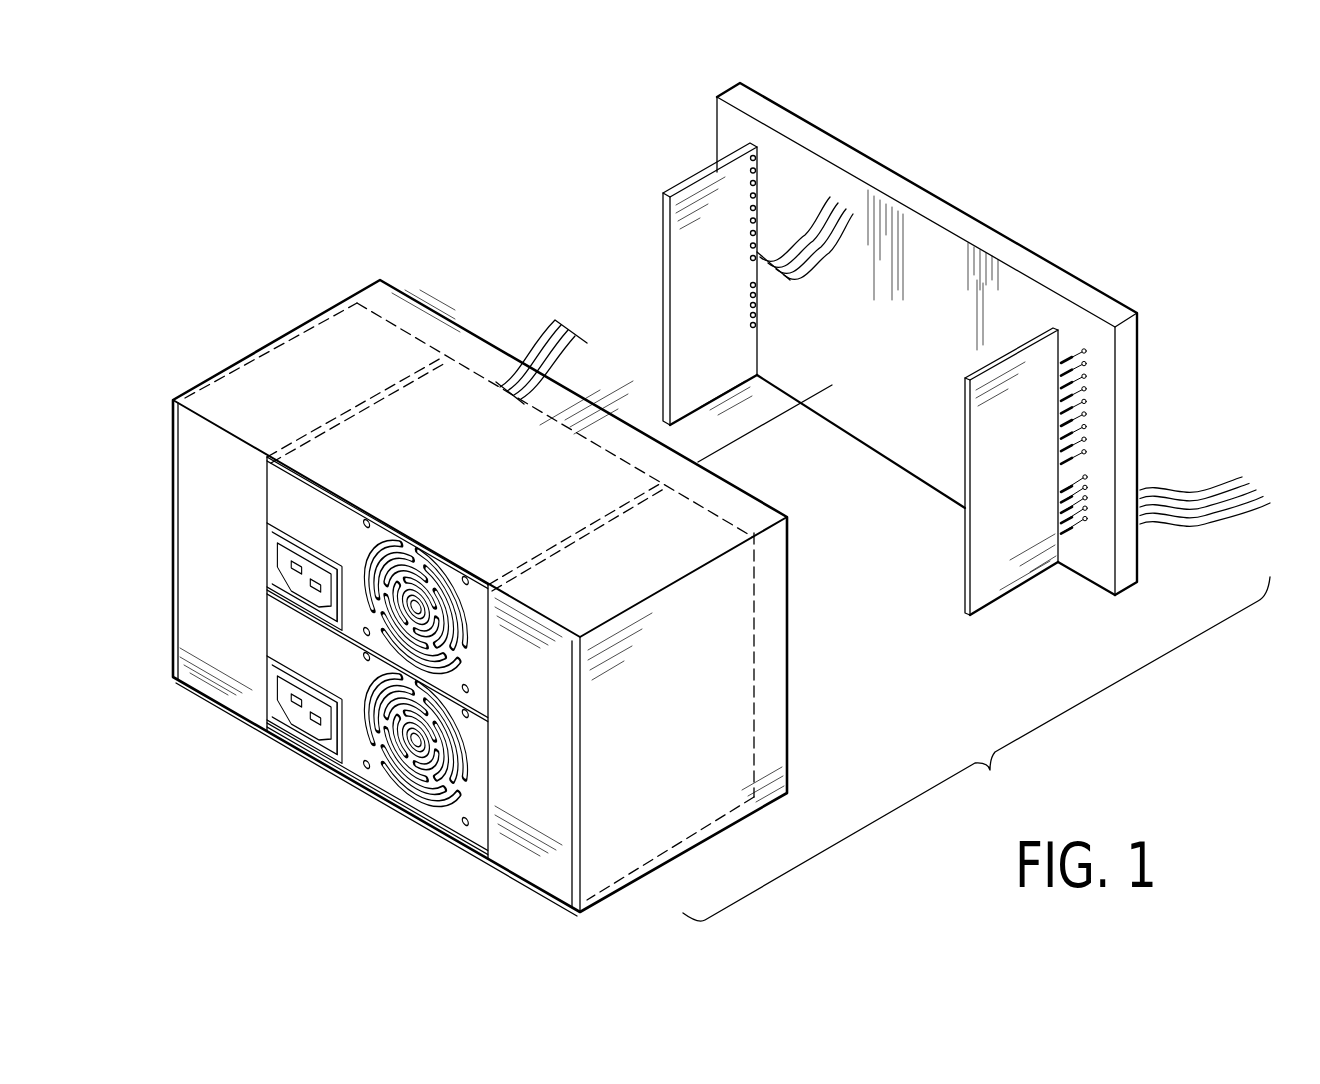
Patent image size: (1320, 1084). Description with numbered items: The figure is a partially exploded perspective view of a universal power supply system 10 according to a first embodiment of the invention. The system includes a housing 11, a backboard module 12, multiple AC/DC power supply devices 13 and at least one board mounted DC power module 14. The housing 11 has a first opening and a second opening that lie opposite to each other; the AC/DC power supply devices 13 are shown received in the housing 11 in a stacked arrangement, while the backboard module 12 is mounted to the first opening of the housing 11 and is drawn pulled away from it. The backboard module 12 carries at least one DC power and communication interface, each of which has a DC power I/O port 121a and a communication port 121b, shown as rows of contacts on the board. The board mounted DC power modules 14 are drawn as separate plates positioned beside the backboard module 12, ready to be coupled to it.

The universal power supply system 10 is at (1008, 156).
The housing 11 is at (407, 295).
The backboard module 12 is at (1032, 262).
The AC/DC power supply device 13 is at (277, 491).
The board mounted DC power module 14 is at (710, 187).
The DC power I/O port 121a is at (1104, 403).
The communication port 121b is at (1104, 508).